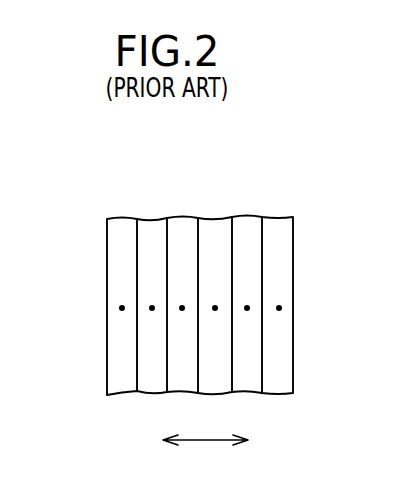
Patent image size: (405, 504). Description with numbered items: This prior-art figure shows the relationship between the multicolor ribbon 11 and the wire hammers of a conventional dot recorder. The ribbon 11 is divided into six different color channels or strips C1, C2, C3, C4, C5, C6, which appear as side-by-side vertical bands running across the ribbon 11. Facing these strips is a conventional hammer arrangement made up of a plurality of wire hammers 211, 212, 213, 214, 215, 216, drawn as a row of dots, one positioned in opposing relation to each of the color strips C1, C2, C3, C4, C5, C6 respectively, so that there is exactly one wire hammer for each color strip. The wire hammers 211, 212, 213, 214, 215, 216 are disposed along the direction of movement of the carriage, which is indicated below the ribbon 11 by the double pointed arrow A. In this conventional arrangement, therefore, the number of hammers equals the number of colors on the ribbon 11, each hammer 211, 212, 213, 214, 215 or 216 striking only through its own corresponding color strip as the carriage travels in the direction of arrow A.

The ribbon 11 is at (293, 231).
The color strip C1 is at (120, 226).
The color strip C2 is at (151, 226).
The color strip C3 is at (181, 226).
The color strip C4 is at (213, 226).
The color strip C5 is at (247, 226).
The color strip C6 is at (281, 225).
The wire hammer 211 is at (120, 308).
The wire hammer 212 is at (151, 309).
The wire hammer 213 is at (182, 310).
The wire hammer 214 is at (216, 307).
The wire hammer 215 is at (248, 307).
The wire hammer 216 is at (280, 309).
The double pointed arrow A is at (205, 451).